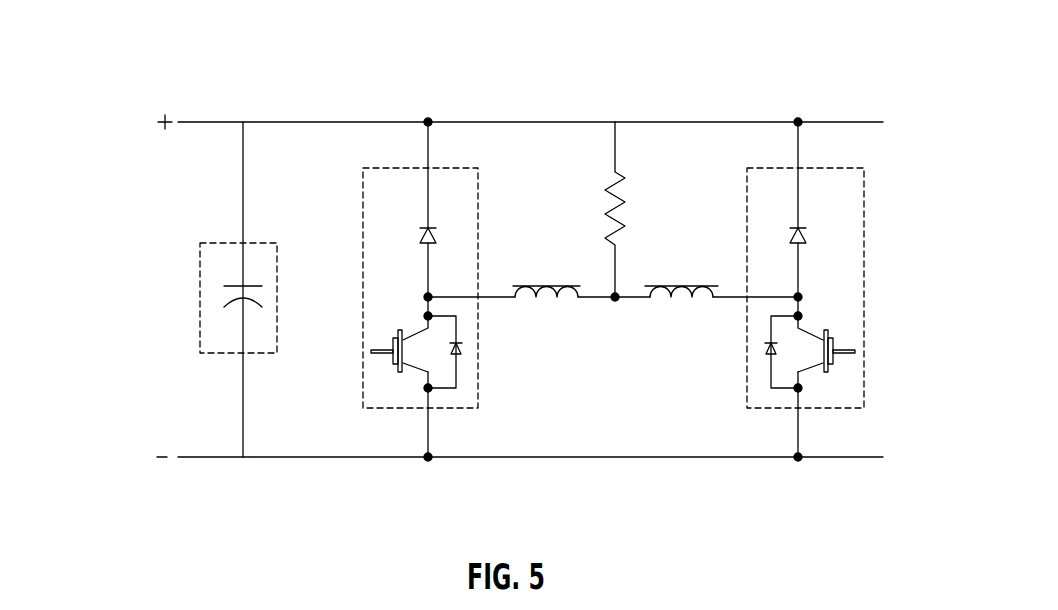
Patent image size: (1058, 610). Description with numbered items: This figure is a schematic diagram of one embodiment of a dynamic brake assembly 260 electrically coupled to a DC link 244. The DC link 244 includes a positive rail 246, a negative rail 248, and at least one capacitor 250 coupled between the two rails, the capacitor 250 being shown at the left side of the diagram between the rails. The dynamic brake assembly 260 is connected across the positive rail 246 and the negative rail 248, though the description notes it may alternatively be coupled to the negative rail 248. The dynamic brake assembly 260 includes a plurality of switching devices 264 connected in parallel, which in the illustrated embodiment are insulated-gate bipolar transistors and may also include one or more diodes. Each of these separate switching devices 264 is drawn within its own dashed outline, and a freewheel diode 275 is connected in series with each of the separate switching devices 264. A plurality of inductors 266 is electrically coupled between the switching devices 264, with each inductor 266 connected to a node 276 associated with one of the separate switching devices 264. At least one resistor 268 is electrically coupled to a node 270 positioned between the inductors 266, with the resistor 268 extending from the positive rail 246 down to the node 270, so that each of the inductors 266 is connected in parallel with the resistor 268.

The DC link 244 is at (122, 125).
The positive rail 246 is at (372, 120).
The negative rail 248 is at (343, 460).
The capacitor 250 is at (198, 303).
The dynamic brake assembly 260 is at (750, 79).
The switching device 264 is at (613, 325).
The inductor 266 is at (657, 322).
The resistor 268 is at (590, 210).
The node 270 is at (615, 303).
The freewheel diode 275 is at (418, 236).
The node 276 is at (425, 299).